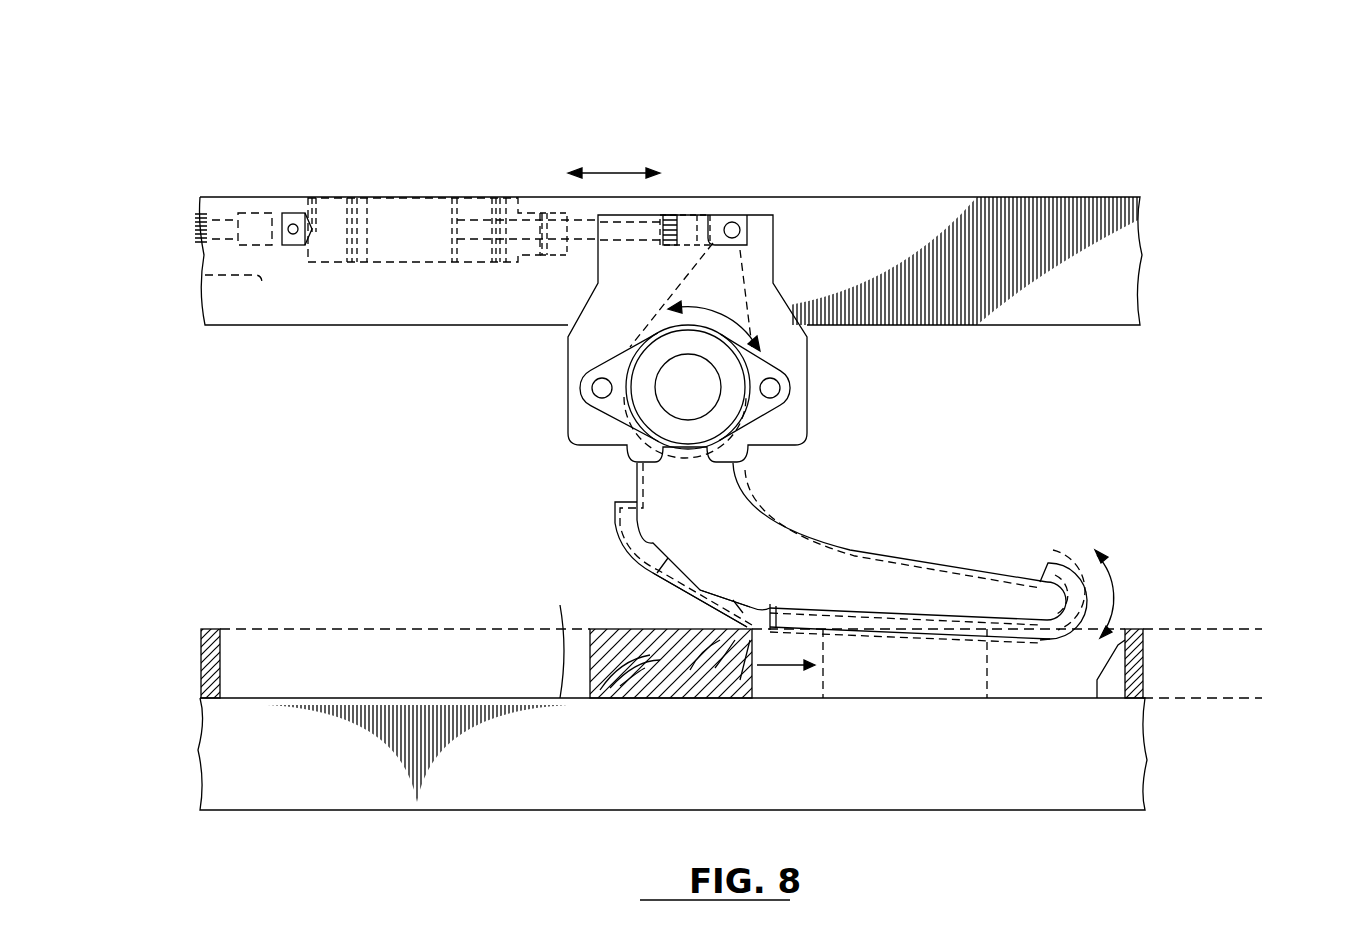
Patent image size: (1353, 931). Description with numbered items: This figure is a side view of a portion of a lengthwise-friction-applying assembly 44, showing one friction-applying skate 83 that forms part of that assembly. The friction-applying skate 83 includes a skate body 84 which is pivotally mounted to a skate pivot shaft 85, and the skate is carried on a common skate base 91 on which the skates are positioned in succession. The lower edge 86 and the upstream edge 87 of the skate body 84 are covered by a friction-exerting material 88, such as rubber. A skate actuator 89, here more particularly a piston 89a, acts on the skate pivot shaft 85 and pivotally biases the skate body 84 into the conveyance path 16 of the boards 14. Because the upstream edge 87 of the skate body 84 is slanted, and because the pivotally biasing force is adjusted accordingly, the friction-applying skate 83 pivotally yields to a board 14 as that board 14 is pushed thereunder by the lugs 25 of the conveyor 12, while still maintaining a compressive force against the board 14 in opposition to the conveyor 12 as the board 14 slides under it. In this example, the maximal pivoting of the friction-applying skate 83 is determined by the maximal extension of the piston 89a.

The conveyor 12 is at (312, 775).
The board 14 is at (215, 683).
The conveyance path 16 is at (1262, 629).
The lugs 25 is at (562, 698).
The actuator assembly 44 is at (1088, 128).
The friction-applying skate 83 is at (786, 554).
The skate body 84 is at (708, 527).
The skate pivot shaft 85 is at (687, 388).
The lower edge 86 is at (920, 640).
The upstream edge 87 is at (680, 598).
The friction-exerting material 88 is at (987, 622).
The skate actuator 89 is at (433, 218).
The piston 89a is at (390, 225).
The common skate base 91 is at (878, 230).